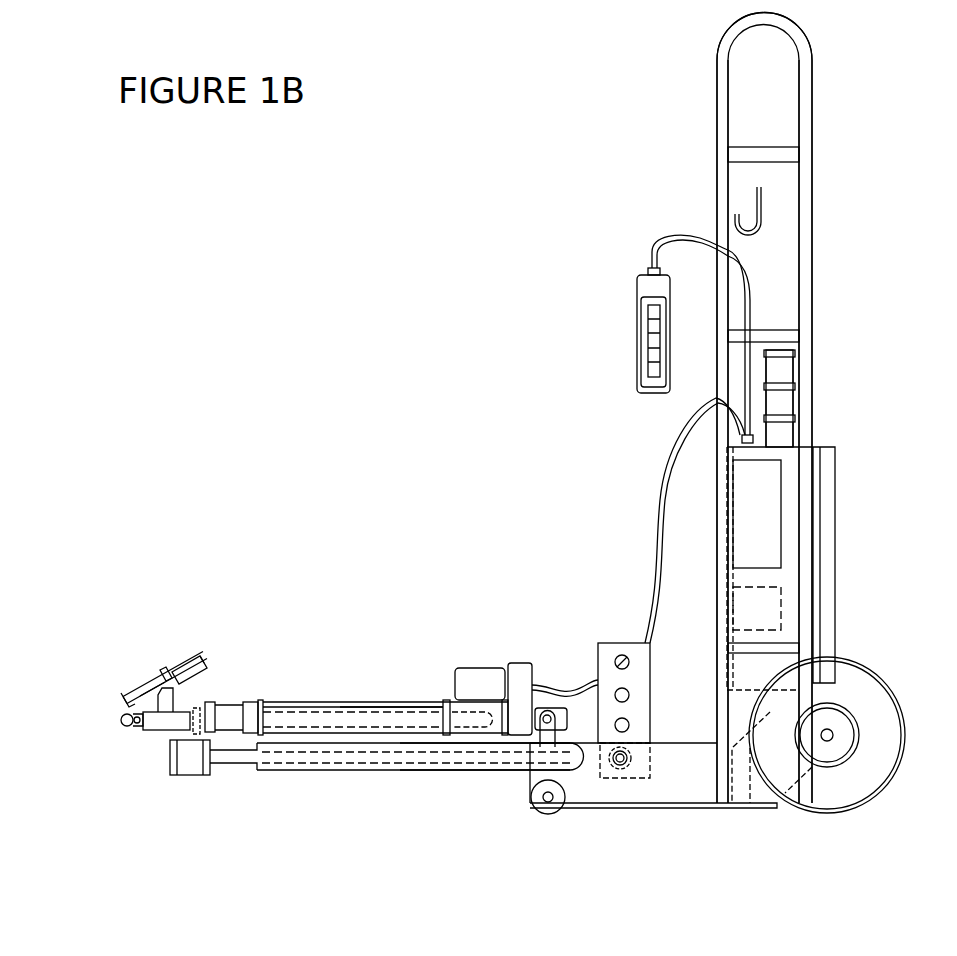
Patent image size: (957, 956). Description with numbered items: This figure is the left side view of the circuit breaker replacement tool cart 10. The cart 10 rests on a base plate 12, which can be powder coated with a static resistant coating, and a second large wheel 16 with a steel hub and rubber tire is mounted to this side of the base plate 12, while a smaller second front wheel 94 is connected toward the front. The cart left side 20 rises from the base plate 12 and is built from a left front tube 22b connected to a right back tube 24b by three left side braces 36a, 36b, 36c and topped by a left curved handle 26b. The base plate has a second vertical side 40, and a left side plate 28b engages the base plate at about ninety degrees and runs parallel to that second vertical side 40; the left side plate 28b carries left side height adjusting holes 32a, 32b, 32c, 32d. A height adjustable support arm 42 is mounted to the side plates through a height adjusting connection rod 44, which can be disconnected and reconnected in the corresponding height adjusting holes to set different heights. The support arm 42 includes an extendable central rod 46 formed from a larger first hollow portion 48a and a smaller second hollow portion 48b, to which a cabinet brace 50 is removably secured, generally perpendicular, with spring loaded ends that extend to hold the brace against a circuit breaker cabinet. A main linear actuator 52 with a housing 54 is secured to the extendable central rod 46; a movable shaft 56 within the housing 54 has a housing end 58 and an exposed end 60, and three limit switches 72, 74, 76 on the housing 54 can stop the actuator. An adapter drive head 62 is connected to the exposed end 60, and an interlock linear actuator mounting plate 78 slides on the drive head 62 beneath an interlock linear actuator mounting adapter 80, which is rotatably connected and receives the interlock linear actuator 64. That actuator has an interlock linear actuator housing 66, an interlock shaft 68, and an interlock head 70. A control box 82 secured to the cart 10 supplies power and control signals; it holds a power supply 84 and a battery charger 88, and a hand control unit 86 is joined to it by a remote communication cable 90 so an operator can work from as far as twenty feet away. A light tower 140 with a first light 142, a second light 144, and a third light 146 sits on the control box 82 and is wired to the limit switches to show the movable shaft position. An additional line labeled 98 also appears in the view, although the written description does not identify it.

The cart 10 is at (880, 36).
The base plate 12 is at (715, 807).
The second large wheel 16 is at (870, 702).
The cart left side 20 is at (806, 80).
The left front tube 22b is at (723, 173).
The right back tube 24b is at (804, 187).
The left curved handle 26b is at (735, 35).
The left side plate 28b is at (641, 660).
The left side height adjusting hole 32a is at (618, 655).
The left side height adjusting hole 32b is at (630, 693).
The left side height adjusting hole 32c is at (630, 723).
The left side height adjusting hole 32d is at (617, 768).
The left side brace 36a is at (780, 152).
The left side brace 36b is at (780, 335).
The left side brace 36c is at (760, 648).
The second vertical side 40 is at (622, 780).
The height adjustable support arm 42 is at (158, 778).
The height adjusting connection rod 44 is at (636, 775).
The extendable central rod 46 is at (397, 778).
The first hollow portion 48a is at (483, 770).
The second hollow portion 48b is at (228, 758).
The cabinet brace 50 is at (190, 763).
The main linear actuator 52 is at (390, 702).
The housing 54 is at (375, 707).
The movable shaft 56 is at (232, 718).
The housing end 58 is at (482, 722).
The exposed end 60 is at (215, 717).
The adapter drive head 62 is at (163, 723).
The interlock linear actuator 64 is at (193, 638).
The interlock linear actuator housing 66 is at (152, 693).
The interlock shaft 68 is at (140, 695).
The interlock head 70 is at (128, 698).
The limit switch 72 is at (500, 718).
The limit switch 74 is at (445, 720).
The limit switch 76 is at (262, 703).
The interlock linear actuator mounting plate 78 is at (123, 715).
The interlock linear actuator mounting adapter 80 is at (165, 677).
The control box 82 is at (836, 462).
The power supply 84 is at (760, 605).
The hand control unit 86 is at (645, 285).
The battery charger 88 is at (760, 518).
The remote communication cable 90 is at (662, 245).
The second front wheel 94 is at (540, 810).
The cable 98 is at (673, 455).
The light tower 140 is at (850, 390).
The first light 142 is at (782, 362).
The second light 144 is at (782, 393).
The third light 146 is at (782, 436).